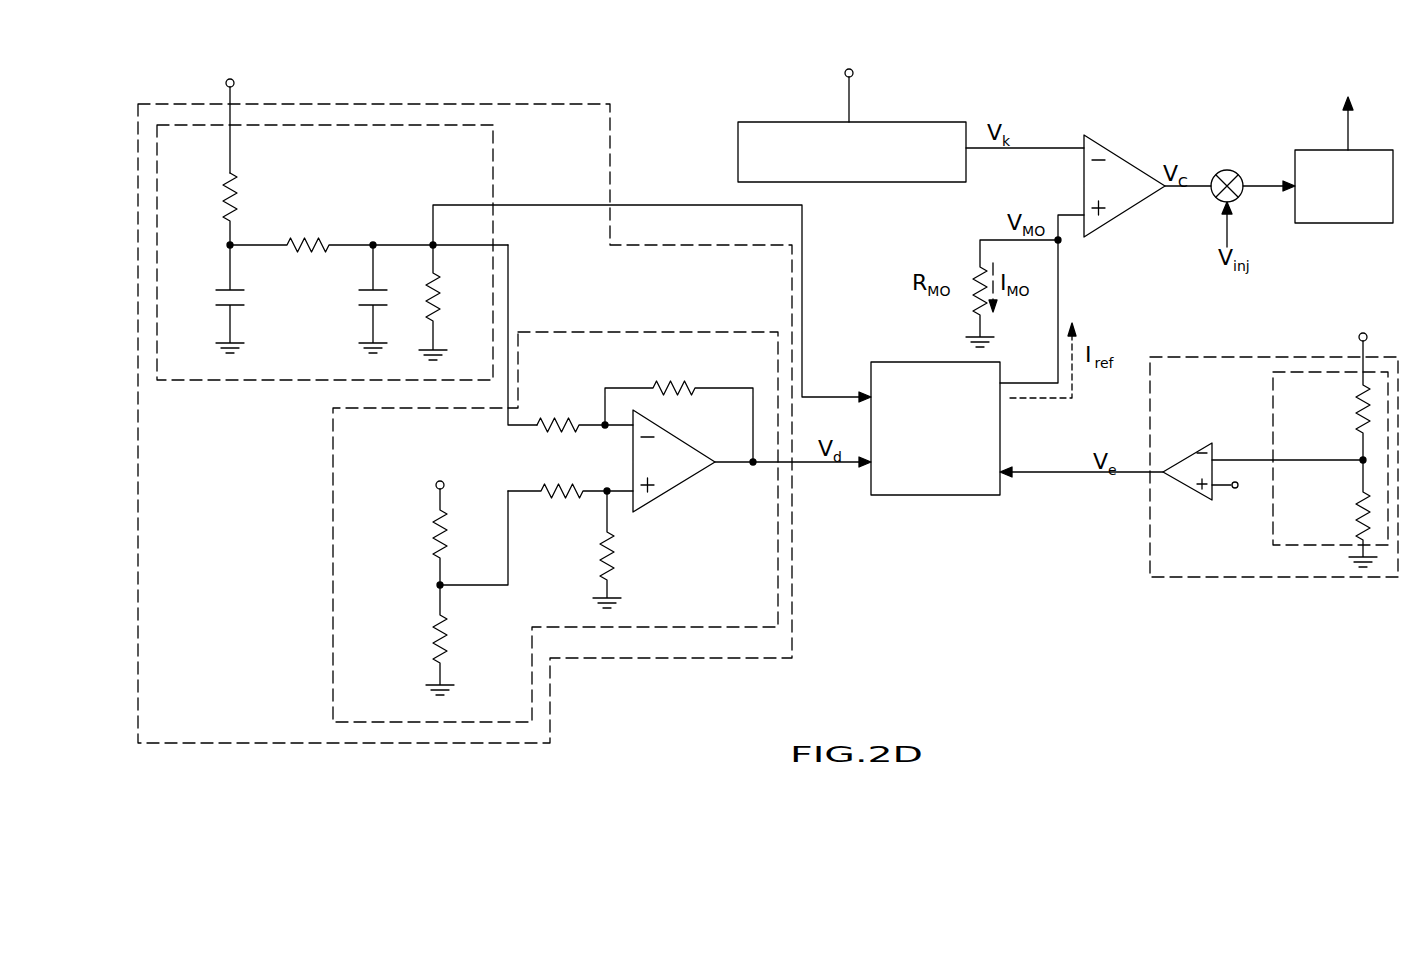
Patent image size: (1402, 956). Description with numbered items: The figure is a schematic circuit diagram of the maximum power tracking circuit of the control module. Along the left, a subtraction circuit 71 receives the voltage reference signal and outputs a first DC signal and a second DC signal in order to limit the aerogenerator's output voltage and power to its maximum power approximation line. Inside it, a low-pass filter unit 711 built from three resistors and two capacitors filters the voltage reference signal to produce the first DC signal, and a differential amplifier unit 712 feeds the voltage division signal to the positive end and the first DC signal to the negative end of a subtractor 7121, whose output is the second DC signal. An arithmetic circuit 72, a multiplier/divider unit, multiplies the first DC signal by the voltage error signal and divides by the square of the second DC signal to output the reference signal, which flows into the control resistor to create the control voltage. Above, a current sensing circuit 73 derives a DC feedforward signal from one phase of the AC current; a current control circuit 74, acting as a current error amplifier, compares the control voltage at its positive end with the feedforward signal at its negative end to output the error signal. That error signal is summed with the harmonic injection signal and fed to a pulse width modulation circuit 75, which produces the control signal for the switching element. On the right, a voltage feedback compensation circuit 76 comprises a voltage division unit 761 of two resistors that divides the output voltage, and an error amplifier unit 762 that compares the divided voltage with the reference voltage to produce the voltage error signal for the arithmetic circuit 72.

The subtraction circuit 71 is at (570, 103).
The low-pass filter unit 711 is at (502, 173).
The differential amplifier unit 712 is at (603, 331).
The subtractor 7121 is at (663, 496).
The arithmetic circuit 72 is at (927, 361).
The current sensing circuit 73 is at (920, 122).
The current control circuit 74 is at (1103, 142).
The pulse width modulation circuit 75 is at (1320, 149).
The voltage feedback compensation circuit 76 is at (1208, 356).
The voltage division unit 761 is at (1308, 371).
The error amplifier unit 762 is at (1192, 455).